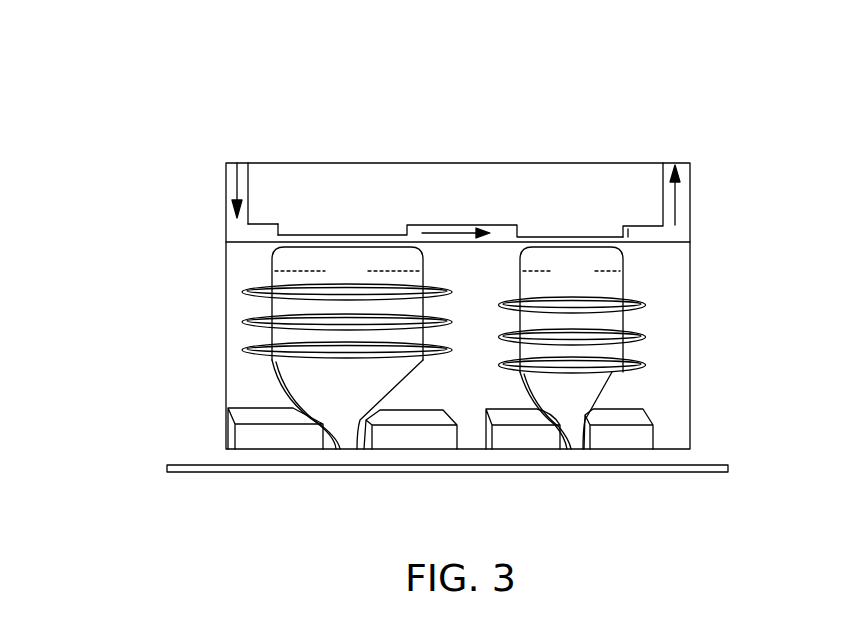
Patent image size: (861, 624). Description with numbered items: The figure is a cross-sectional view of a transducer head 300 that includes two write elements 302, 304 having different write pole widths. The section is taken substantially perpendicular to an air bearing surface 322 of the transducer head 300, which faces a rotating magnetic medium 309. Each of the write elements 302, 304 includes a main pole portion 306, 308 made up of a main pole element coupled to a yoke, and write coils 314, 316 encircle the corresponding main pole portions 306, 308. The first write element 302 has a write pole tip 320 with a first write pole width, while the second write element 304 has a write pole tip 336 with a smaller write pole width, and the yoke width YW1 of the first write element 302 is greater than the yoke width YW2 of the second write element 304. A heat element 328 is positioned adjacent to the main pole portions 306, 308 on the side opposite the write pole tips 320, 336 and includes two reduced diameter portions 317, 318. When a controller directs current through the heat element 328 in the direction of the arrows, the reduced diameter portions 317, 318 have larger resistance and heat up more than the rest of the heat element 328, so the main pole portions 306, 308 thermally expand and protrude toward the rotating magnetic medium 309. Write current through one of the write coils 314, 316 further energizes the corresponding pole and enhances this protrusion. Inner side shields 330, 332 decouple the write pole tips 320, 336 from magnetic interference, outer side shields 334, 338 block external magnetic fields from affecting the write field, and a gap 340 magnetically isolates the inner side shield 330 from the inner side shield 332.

The transducer head 300 is at (118, 50).
The first write element 302 is at (252, 267).
The second write element 304 is at (660, 320).
The main pole portion 306 is at (423, 268).
The main pole portion 308 is at (623, 272).
The rotating magnetic medium 309 is at (675, 473).
The write coil 314 is at (242, 320).
The write coil 316 is at (645, 337).
The reduced diameter portion 317 is at (345, 234).
The reduced diameter portion 318 is at (570, 236).
The write pole tip 320 is at (347, 449).
The air bearing surface 322 is at (636, 460).
The heat element 328 is at (232, 204).
The inner side shield 330 is at (417, 438).
The inner side shield 332 is at (525, 438).
The outer side shield 334 is at (280, 440).
The write pole tip 336 is at (577, 449).
The outer side shield 338 is at (632, 437).
The gap 340 is at (474, 443).